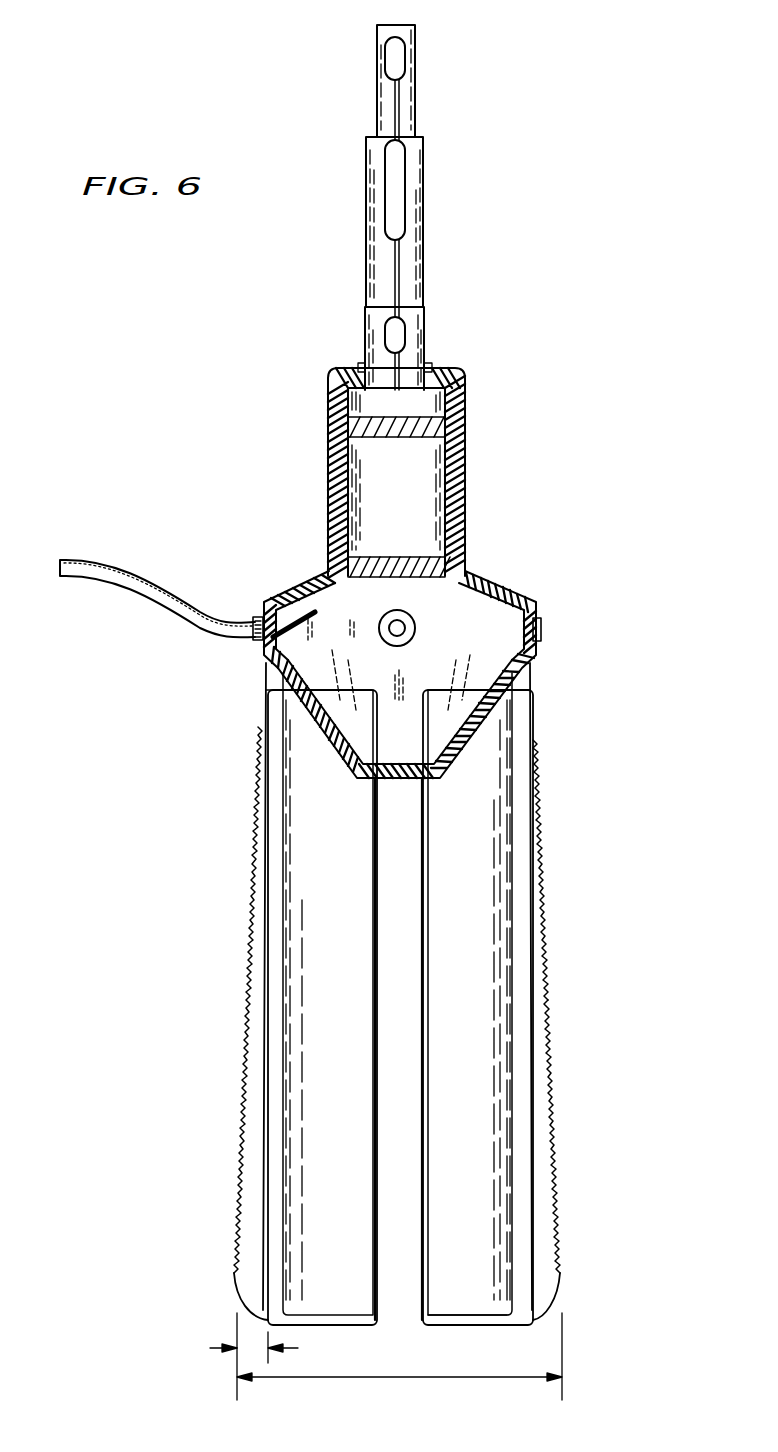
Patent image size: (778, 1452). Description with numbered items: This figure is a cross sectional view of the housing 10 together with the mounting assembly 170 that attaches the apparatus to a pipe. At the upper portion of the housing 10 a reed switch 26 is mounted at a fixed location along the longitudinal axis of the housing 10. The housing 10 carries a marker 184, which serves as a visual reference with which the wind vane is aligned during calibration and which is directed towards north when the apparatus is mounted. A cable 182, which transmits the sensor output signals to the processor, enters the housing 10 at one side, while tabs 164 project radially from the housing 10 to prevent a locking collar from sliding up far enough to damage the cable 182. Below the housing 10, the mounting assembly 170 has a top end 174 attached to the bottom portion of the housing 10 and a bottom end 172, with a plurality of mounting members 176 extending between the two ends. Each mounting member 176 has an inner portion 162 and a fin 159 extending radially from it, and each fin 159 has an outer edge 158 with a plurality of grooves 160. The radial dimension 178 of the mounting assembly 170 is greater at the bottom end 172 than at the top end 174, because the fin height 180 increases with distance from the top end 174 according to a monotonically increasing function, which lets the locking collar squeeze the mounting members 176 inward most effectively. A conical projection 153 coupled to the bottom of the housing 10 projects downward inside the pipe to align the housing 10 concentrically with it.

The reed switch 26 is at (407, 190).
The housing 10 is at (292, 577).
The top end 174 is at (263, 677).
The marker 184 is at (417, 629).
The tabs 164 is at (543, 630).
The cable 182 is at (128, 562).
The mounting assembly 170 is at (128, 785).
The mounting members 176 is at (534, 763).
The fin 159 is at (538, 1197).
The outer edge 158 is at (556, 1290).
The grooves 160 is at (548, 1068).
The inner portion 162 is at (482, 866).
The conical projection 153 is at (357, 776).
The bottom end 172 is at (493, 1325).
The radial dimension 178 is at (353, 1378).
The fin height 180 is at (214, 1347).